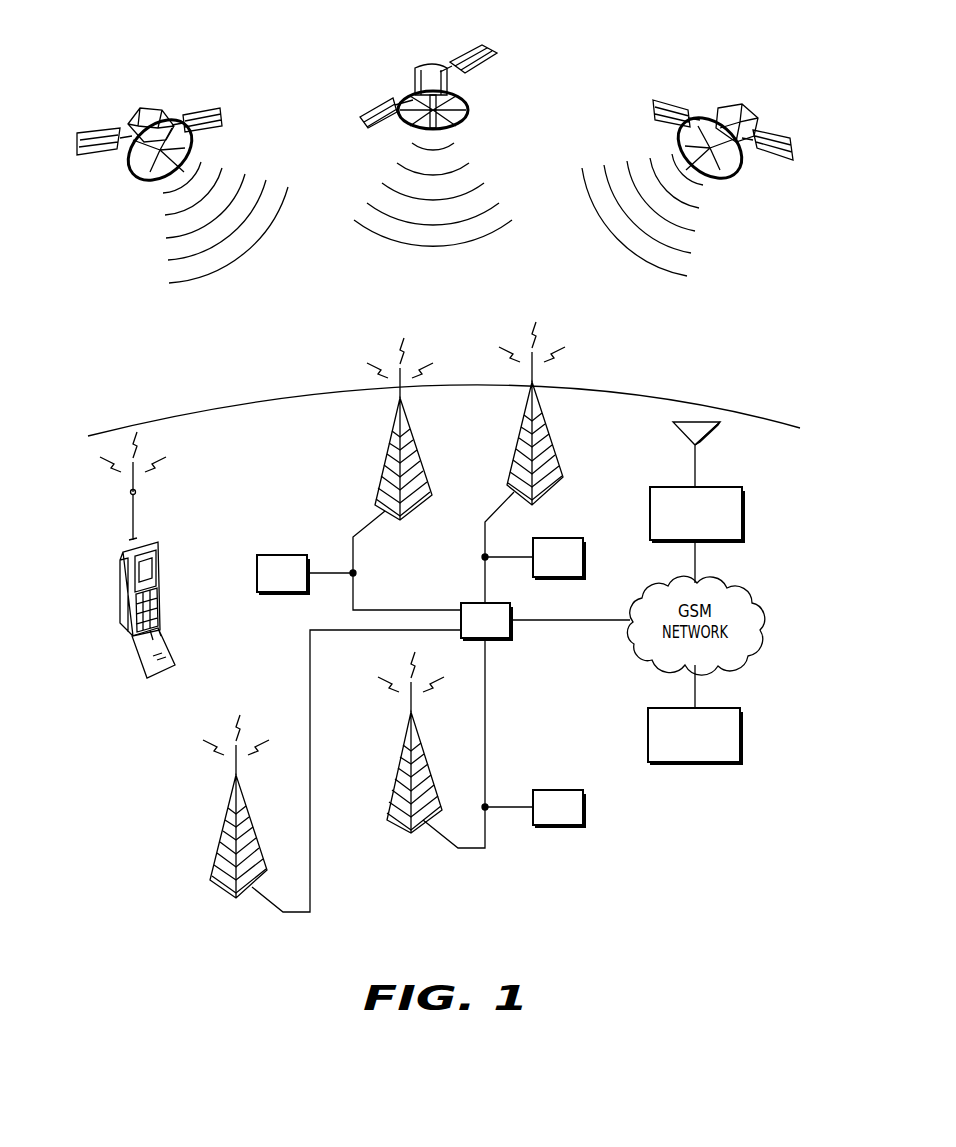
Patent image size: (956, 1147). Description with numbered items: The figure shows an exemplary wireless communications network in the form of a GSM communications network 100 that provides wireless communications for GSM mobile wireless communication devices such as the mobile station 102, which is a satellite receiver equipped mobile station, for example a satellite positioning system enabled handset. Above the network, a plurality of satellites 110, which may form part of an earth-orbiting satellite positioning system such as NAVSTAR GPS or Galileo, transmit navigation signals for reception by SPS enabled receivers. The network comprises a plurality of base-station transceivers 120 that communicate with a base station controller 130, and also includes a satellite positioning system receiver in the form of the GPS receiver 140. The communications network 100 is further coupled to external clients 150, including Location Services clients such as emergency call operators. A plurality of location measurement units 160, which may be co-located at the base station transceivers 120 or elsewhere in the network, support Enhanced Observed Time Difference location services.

The GSM communications network 100 is at (651, 15).
The mobile station 102 is at (163, 600).
The satellites 110 is at (139, 112).
The base-station transceivers 120 is at (374, 506).
The base station controller 130 is at (510, 636).
The GPS receiver 140 is at (742, 514).
The external clients 150 is at (740, 739).
The location measurement units 160 is at (279, 554).